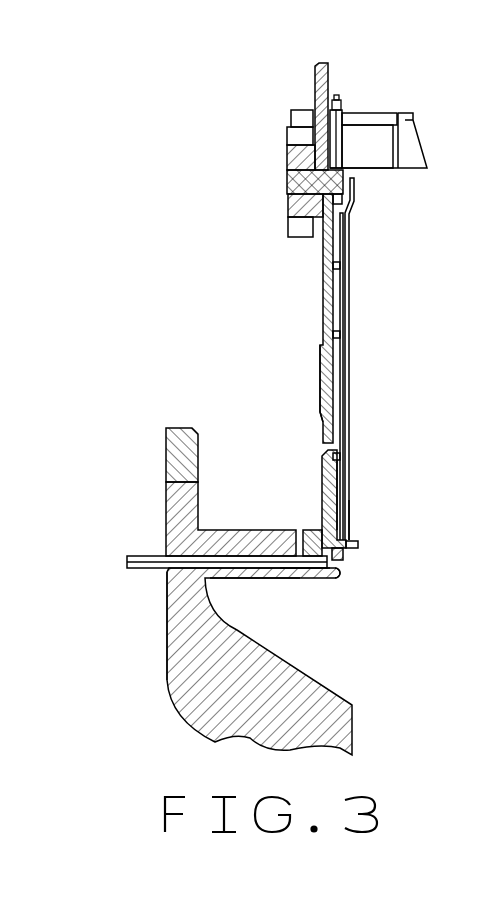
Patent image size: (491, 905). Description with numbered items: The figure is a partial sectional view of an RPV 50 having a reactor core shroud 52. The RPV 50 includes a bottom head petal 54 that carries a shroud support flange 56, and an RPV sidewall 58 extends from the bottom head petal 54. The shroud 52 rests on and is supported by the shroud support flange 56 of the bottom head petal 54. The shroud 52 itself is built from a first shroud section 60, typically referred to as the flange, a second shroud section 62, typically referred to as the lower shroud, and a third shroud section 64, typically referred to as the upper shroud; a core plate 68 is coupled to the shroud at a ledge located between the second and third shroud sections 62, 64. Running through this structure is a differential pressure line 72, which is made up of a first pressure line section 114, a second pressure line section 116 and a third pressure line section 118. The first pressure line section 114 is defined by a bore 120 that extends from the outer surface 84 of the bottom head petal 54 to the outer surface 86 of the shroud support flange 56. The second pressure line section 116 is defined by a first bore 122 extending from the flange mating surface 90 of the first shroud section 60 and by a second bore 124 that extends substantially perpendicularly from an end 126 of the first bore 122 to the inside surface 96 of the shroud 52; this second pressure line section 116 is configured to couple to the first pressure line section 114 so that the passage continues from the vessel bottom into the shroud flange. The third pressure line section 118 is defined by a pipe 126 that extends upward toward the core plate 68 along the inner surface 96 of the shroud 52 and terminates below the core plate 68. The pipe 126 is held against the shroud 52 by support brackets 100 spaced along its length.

The RPV 50 is at (281, 64).
The reactor core shroud 52 is at (296, 309).
The bottom head petal 54 is at (172, 688).
The shroud support flange 56 is at (300, 572).
The RPV sidewall 58 is at (166, 437).
The first shroud section 60 is at (322, 478).
The second shroud section 62 is at (322, 270).
The third shroud section 64 is at (329, 80).
The core plate 68 is at (382, 112).
The differential pressure line 72 is at (360, 383).
The outer surface of bottom head petal 84 is at (166, 612).
The outer surface of shroud support flange 86 is at (344, 573).
The flange mating surface 90 is at (300, 553).
The inside surface of shroud 96 is at (333, 493).
The support brackets 100 is at (350, 263).
The first pressure line section 114 is at (233, 580).
The second pressure line section 116 is at (359, 547).
The third pressure line section 118 is at (348, 300).
The bore 120 is at (127, 562).
The first bore 122 is at (319, 575).
The second bore 124 is at (350, 521).
The pipe 126 is at (350, 425).